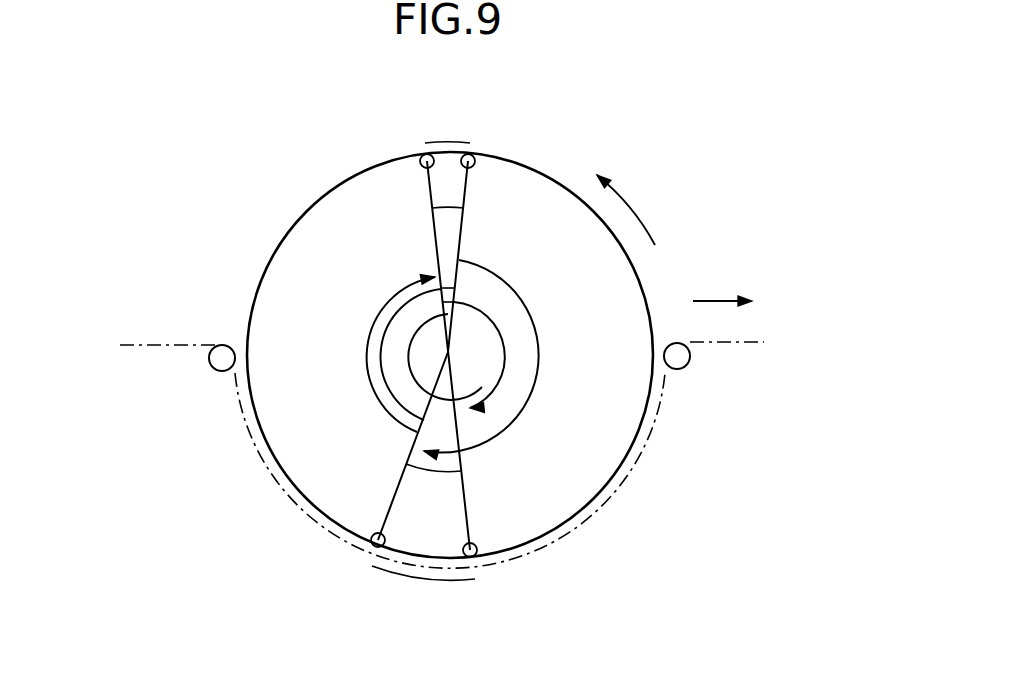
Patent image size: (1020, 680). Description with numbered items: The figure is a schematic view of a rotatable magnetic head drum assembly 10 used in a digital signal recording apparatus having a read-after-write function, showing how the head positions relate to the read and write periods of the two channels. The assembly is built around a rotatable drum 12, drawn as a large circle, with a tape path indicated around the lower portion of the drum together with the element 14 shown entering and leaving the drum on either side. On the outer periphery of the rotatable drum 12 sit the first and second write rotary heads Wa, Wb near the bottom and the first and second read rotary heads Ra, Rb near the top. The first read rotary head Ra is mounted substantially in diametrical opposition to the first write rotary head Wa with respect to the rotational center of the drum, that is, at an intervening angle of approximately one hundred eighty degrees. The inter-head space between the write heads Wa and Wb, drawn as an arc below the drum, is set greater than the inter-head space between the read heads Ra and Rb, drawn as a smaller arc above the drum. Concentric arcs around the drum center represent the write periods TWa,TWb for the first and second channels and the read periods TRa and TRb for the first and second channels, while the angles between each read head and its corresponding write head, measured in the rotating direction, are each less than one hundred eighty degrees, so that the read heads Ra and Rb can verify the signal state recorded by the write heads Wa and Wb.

The rotatable magnetic head drum assembly 10 is at (713, 117).
The rotatable drum 12 is at (296, 216).
The transfer belt 14 is at (764, 342).
The first read rotary head Ra is at (421, 158).
The second read rotary head Rb is at (476, 160).
The first write rotary head Wa is at (473, 557).
The second write rotary head Wb is at (373, 551).
The write periods TWa,TWb is at (392, 296).
The read period for first channel TRa is at (498, 383).
The read period for second channel TRb is at (528, 302).